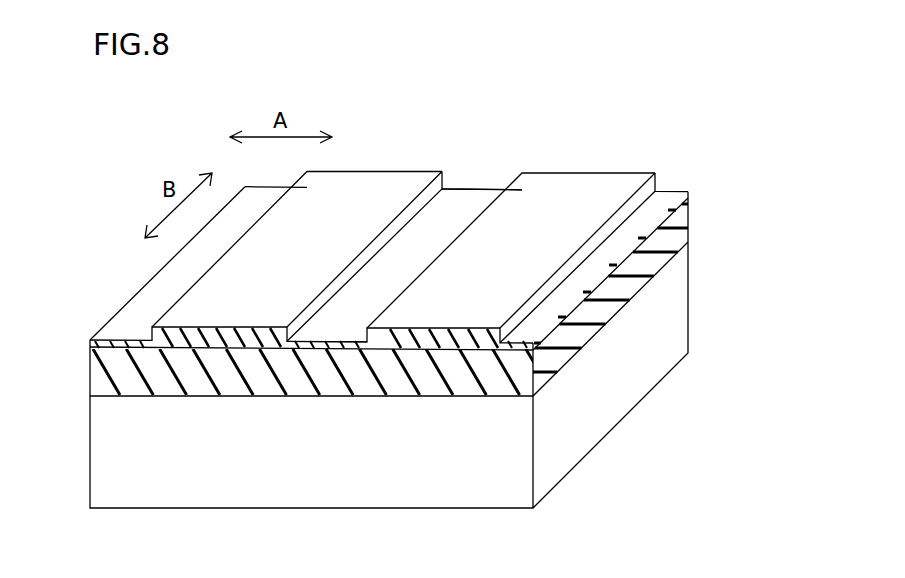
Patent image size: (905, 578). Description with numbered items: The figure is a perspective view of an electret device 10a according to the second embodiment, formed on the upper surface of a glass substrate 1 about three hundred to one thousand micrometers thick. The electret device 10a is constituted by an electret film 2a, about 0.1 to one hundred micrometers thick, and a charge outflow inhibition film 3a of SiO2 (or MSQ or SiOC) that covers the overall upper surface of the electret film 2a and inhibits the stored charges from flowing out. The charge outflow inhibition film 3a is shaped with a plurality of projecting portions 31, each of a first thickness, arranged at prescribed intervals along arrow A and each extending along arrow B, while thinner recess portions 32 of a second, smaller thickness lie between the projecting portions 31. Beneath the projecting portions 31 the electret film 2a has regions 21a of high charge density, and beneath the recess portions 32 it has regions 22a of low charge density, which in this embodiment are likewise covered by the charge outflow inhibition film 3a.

The substrate 1 is at (673, 310).
The electret device 10a is at (452, 327).
The electret film 2a is at (425, 378).
The charge outflow inhibition film 3a is at (425, 222).
The region having a high charge density 21a is at (220, 370).
The region having a low charge density 22a is at (328, 370).
The projecting portion 31 is at (374, 188).
The recess portion 32 is at (469, 205).